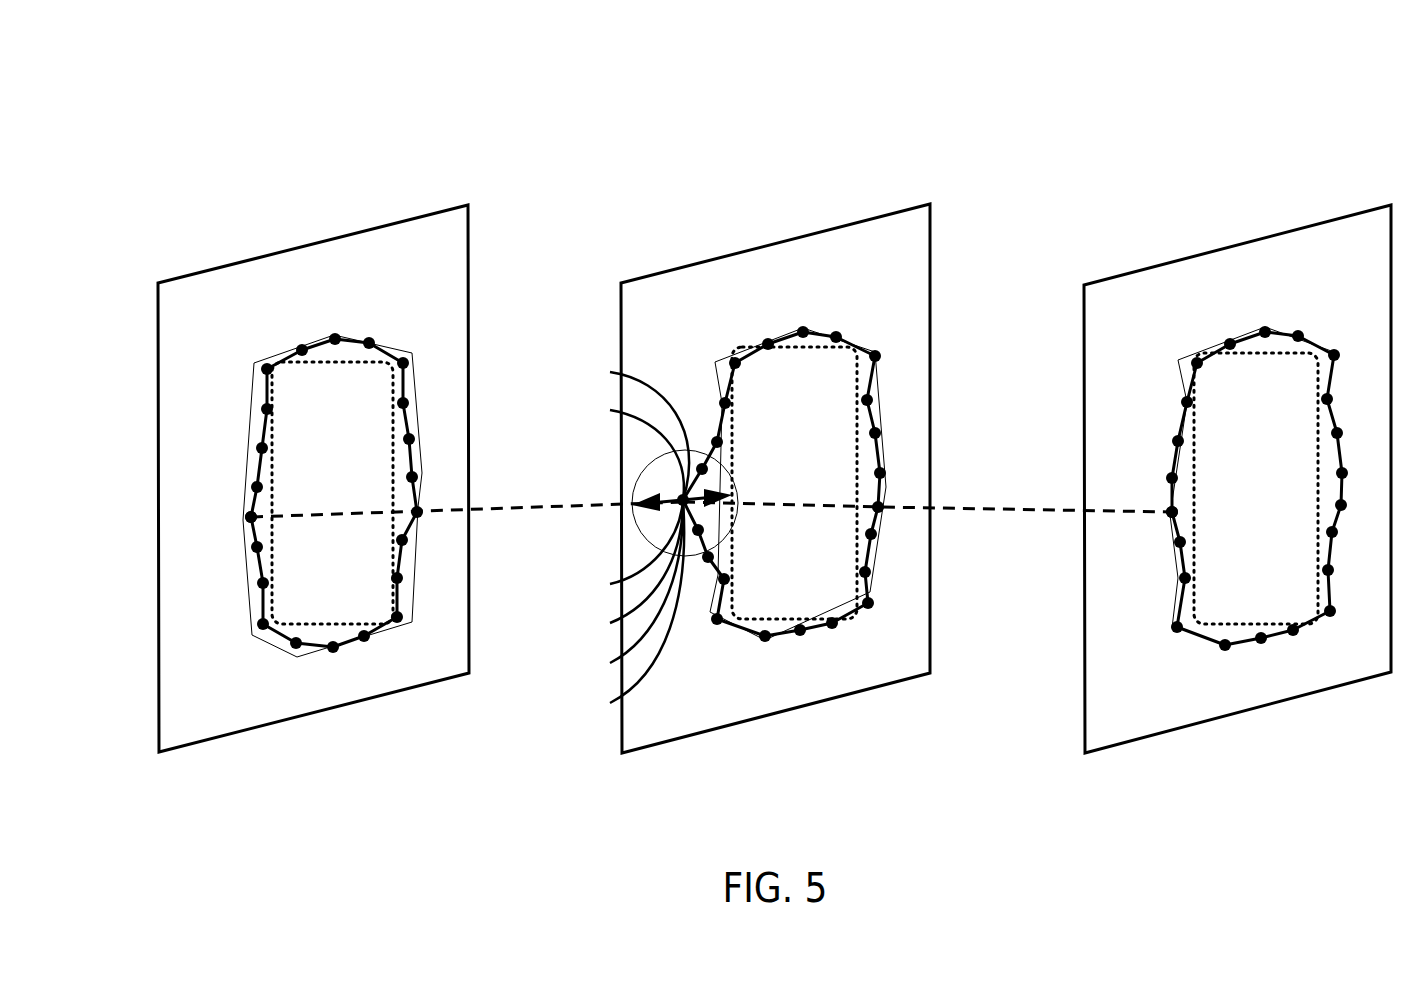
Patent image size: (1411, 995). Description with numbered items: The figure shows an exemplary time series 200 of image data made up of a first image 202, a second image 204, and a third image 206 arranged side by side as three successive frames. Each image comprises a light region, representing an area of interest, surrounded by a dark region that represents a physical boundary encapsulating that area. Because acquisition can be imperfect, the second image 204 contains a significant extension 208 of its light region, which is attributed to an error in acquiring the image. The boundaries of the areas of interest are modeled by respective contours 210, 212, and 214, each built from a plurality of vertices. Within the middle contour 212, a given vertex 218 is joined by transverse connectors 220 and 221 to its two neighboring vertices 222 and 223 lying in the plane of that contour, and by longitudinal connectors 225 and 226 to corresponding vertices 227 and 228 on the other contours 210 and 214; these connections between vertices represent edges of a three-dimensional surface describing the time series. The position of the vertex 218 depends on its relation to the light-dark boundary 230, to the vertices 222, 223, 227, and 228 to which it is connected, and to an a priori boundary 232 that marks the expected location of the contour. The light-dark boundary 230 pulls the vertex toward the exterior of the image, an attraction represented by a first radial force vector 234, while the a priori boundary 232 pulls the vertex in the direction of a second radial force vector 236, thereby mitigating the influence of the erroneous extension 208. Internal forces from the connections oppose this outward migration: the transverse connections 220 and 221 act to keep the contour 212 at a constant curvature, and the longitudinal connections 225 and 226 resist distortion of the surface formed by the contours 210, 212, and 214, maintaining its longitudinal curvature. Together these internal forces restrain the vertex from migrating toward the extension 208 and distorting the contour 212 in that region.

The time series 200 is at (1000, 98).
The first image 202 is at (313, 242).
The second image 204 is at (773, 243).
The third image 206 is at (1237, 240).
The extension 208 is at (662, 480).
The contour 210 is at (353, 333).
The contour 212 is at (818, 330).
The contour 214 is at (1280, 328).
The vertex 218 is at (620, 549).
The transverse connector 220 is at (621, 447).
The transverse connector 221 is at (620, 589).
The neighboring vertex 222 is at (623, 428).
The neighboring vertex 223 is at (621, 609).
The longitudinal connector 225 is at (547, 502).
The longitudinal connector 226 is at (1060, 507).
The corresponding vertex 227 is at (250, 515).
The corresponding vertex 228 is at (1170, 507).
The light-dark boundary 230 is at (715, 362).
The a priori boundary 232 is at (795, 347).
The first radial force vector 234 is at (668, 518).
The second radial force vector 236 is at (620, 569).